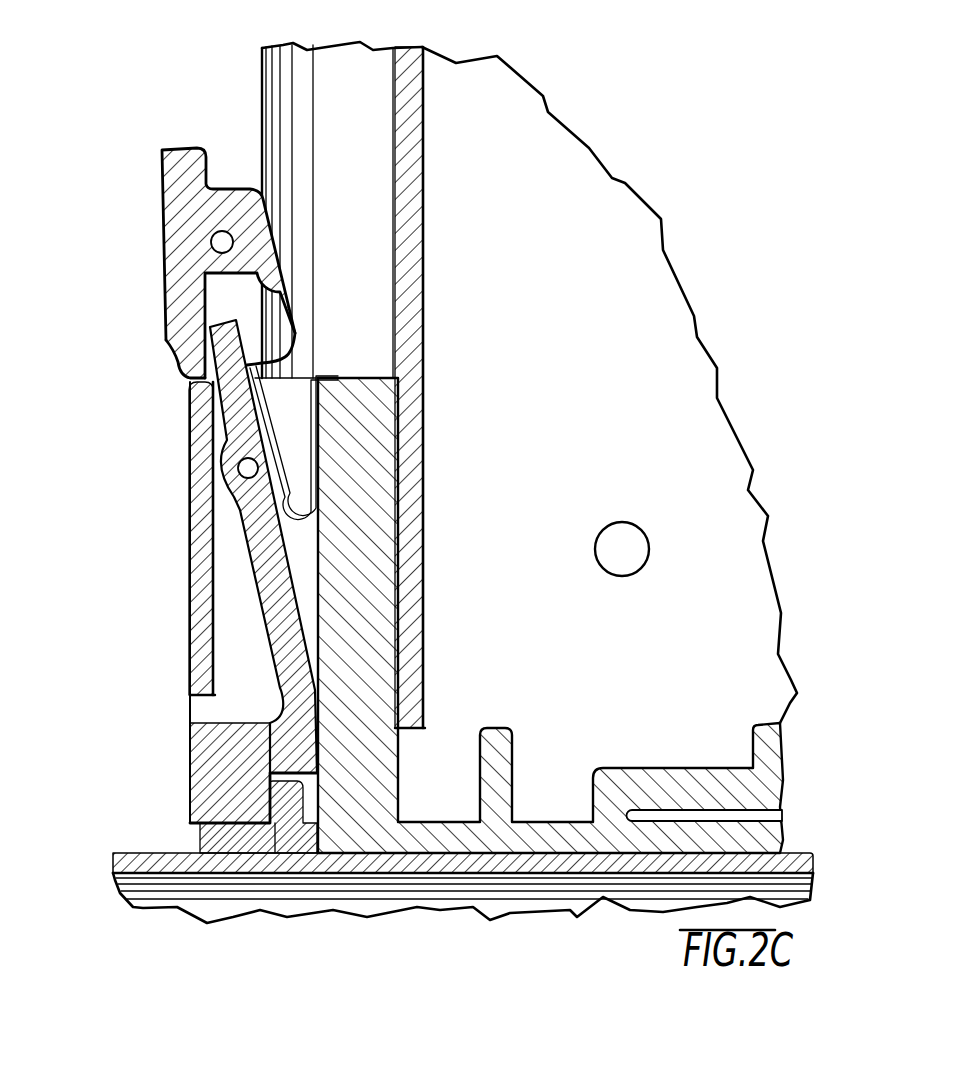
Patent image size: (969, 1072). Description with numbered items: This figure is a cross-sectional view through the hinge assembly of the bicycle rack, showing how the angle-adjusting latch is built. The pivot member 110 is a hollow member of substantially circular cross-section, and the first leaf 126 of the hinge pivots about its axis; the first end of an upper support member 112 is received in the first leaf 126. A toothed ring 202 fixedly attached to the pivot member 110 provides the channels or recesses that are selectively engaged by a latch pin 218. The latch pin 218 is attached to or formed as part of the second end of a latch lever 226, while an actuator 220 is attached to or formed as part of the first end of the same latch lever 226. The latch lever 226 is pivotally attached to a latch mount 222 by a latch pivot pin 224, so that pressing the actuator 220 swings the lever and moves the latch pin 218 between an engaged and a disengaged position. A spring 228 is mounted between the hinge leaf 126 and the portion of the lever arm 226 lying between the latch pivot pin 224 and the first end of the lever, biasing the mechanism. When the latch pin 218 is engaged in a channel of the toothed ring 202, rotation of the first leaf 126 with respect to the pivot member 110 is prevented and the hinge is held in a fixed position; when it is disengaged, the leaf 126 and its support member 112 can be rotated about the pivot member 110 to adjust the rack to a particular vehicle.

The pivot member 110 is at (155, 866).
The upper support member 112 is at (285, 88).
The first leaf 126 is at (548, 822).
The toothed ring 202 is at (228, 827).
The latch pin 218 is at (218, 761).
The actuator 220 is at (173, 167).
The latch mount 222 is at (238, 466).
The latch pivot pin 224 is at (190, 443).
The latch lever 226 is at (260, 540).
The spring 228 is at (255, 373).